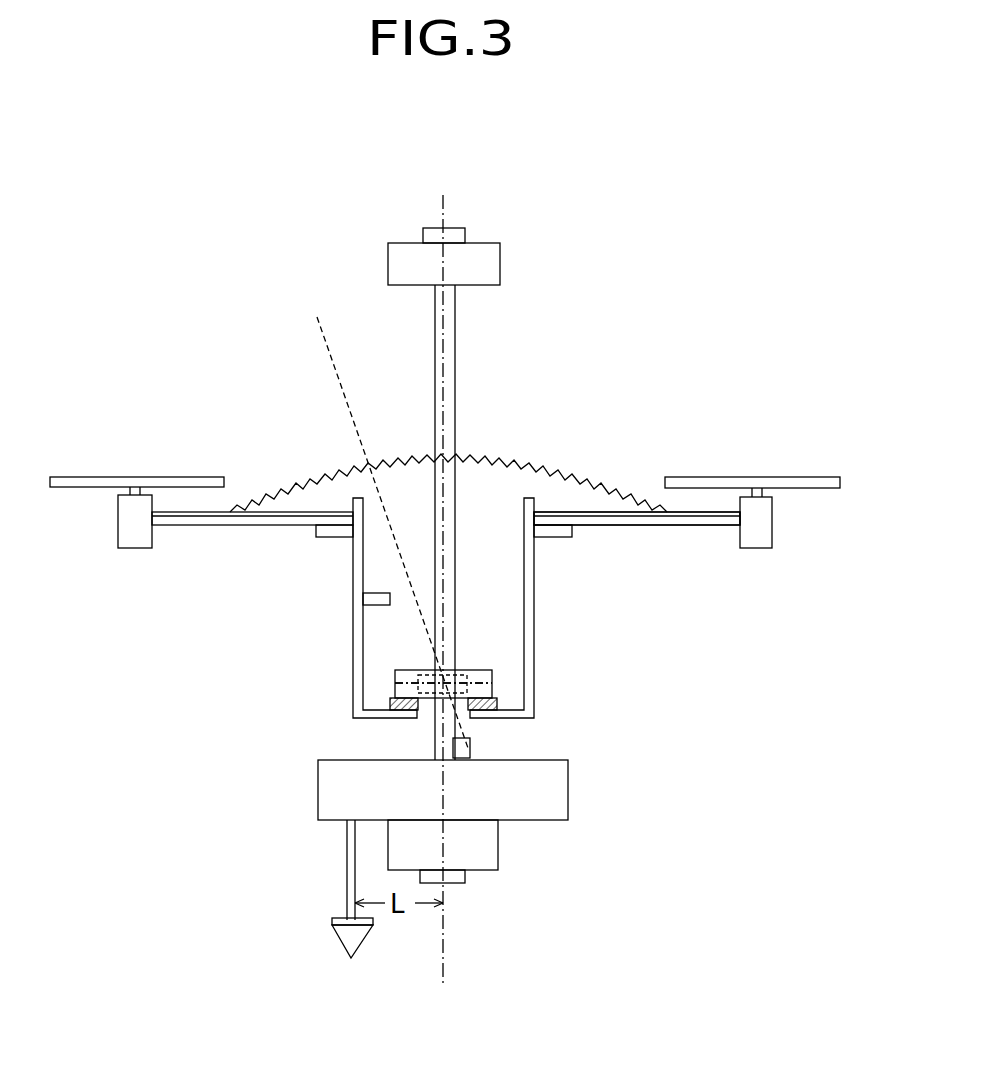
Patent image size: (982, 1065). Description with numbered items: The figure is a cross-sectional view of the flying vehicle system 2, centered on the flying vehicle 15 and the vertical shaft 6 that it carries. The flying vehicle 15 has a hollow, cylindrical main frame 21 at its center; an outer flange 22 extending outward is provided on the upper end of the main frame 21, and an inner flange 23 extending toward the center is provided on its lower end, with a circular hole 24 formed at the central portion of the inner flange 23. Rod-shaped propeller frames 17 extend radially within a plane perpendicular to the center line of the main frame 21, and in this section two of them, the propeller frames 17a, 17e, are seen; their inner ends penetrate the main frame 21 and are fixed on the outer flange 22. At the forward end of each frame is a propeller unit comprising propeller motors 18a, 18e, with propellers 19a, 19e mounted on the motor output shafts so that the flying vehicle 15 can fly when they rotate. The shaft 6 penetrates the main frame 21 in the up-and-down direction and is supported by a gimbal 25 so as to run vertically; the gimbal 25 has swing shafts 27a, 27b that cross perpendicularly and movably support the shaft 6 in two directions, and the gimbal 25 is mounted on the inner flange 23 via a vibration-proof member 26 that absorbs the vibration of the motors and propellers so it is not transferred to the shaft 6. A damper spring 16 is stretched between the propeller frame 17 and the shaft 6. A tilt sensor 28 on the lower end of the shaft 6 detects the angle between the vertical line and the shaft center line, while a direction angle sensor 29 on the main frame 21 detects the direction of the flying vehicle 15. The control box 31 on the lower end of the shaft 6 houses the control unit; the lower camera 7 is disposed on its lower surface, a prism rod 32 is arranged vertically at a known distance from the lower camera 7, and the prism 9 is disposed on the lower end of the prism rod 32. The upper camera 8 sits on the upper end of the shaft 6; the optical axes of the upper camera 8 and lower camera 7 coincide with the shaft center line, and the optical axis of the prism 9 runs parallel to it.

The flying vehicle system 2 is at (277, 145).
The shaft 6 is at (455, 370).
The lower camera 7 is at (498, 845).
The upper camera 8 is at (500, 263).
The prism 9 is at (340, 942).
The flying vehicle 15 is at (645, 412).
The damper spring 16 is at (307, 480).
The propeller frame 17 is at (708, 525).
The propeller frame 17a is at (198, 527).
The propeller frame 17e is at (660, 525).
The propeller motor 18a is at (130, 548).
The propeller motor 18e is at (773, 530).
The propeller 19a is at (85, 477).
The propeller 19e is at (797, 477).
The main frame 21 is at (534, 632).
The outer flange 22 is at (560, 537).
The inner flange 23 is at (367, 721).
The circular hole 24 is at (423, 718).
The gimbal 25 is at (473, 668).
The vibration-proof member 26 is at (393, 697).
The swing shaft 27a is at (423, 668).
The swing shaft 27b is at (528, 675).
The tilt sensor 28 is at (470, 745).
The direction angle sensor 29 is at (370, 593).
The control box 31 is at (568, 790).
The prism rod 32 is at (347, 857).